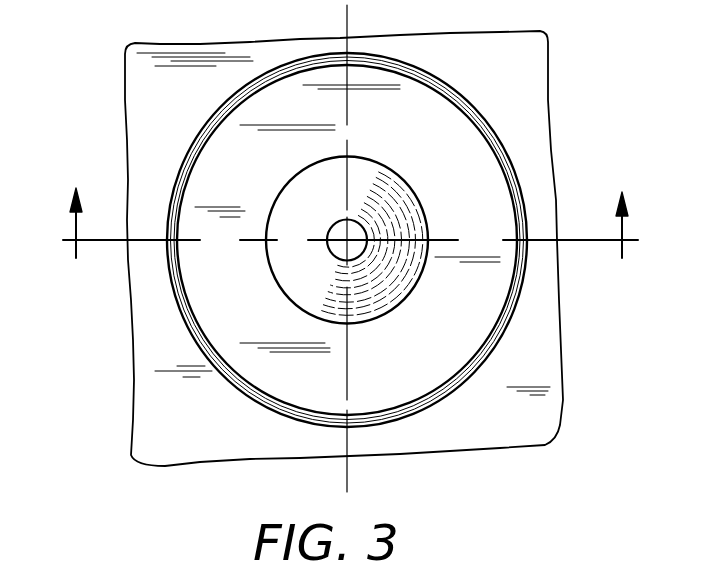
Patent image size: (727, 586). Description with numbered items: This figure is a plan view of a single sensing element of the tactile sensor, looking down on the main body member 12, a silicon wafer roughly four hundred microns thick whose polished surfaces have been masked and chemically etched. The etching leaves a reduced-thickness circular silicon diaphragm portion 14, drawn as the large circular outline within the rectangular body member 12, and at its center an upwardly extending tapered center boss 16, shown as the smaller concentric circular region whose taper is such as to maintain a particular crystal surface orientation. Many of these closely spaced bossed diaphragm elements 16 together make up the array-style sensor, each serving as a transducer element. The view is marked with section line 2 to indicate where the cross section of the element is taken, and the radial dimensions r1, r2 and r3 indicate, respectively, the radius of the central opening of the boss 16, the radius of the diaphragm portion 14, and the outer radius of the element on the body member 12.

The main body member 12 is at (533, 70).
The circular silicon diaphragm portion 14 is at (206, 315).
The tapered center boss 16 is at (313, 182).
The section line 2- 2 is at (350, 208).
The radius of central opening r1 is at (347, 240).
The radius of hub r2 is at (347, 240).
The radius of disc r3 is at (347, 240).